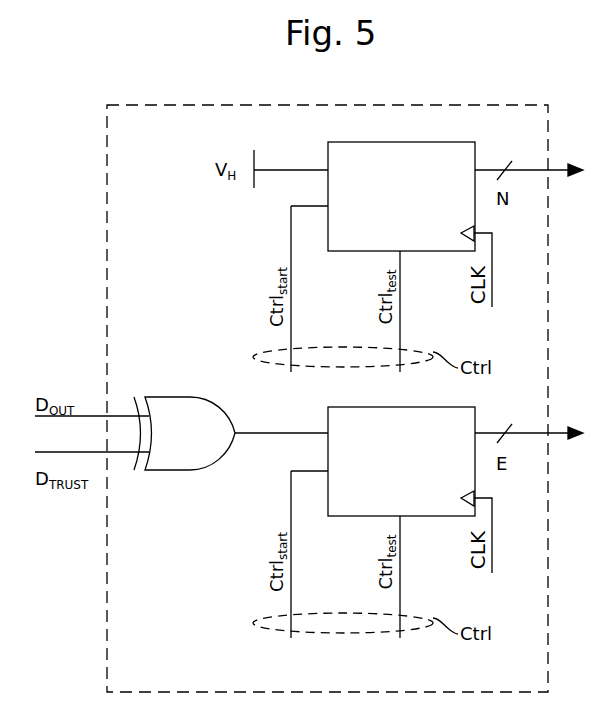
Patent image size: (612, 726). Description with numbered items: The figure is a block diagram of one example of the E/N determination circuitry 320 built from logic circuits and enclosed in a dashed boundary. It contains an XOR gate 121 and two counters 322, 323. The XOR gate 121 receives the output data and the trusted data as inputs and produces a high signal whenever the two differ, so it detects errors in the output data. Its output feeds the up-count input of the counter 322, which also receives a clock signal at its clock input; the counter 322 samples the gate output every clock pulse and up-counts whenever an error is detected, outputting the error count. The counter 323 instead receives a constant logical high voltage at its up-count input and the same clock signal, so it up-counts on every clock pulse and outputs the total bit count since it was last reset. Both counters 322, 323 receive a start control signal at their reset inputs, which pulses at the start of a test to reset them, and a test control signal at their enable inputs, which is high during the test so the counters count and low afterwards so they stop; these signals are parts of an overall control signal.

The E/N determination circuitry 320 is at (107, 212).
The counter 323 is at (401, 197).
The counter 322 is at (401, 462).
The XOR gate 121 is at (172, 472).